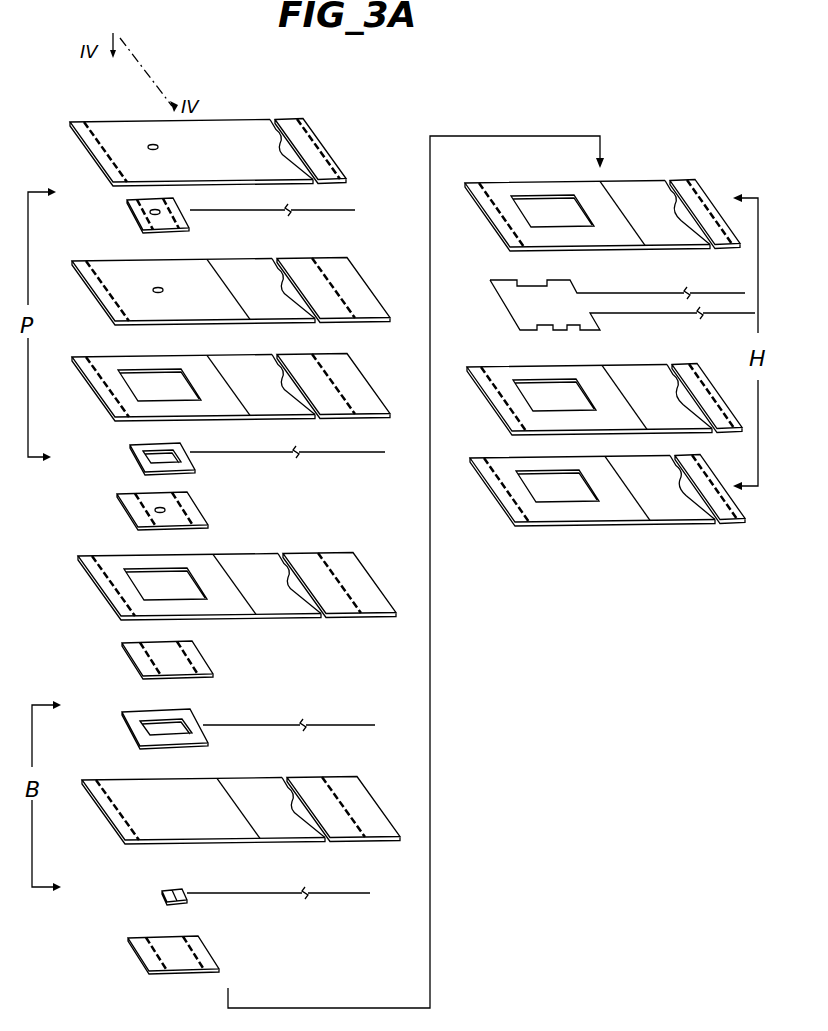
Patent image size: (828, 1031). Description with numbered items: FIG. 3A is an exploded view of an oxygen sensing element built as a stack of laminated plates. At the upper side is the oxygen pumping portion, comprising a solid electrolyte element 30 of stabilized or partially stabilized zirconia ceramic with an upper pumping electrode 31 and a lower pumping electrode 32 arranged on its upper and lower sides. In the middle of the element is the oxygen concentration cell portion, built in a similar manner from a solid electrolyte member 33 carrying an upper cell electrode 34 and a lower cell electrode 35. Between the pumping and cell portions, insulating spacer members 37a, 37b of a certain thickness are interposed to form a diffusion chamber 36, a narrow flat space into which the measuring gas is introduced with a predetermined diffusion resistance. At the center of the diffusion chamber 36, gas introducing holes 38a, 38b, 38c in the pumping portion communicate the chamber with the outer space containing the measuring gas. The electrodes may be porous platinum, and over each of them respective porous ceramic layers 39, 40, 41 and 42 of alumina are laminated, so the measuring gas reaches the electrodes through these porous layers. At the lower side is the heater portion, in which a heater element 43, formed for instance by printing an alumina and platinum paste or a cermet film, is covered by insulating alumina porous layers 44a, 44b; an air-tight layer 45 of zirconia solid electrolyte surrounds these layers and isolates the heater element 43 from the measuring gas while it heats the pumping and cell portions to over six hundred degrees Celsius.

The solid electrolyte element 30 is at (113, 303).
The upper pumping electrode 31 is at (128, 213).
The lower pumping electrode 32 is at (129, 457).
The solid electrolyte member 33 is at (118, 820).
The upper cell electrode 34 is at (133, 733).
The lower cell electrode 35 is at (162, 893).
The diffusion chamber 36 is at (148, 578).
The spacer member 37a is at (105, 393).
The spacer member 37b is at (105, 587).
The gas introducing hole 38a is at (160, 145).
The gas introducing hole 38b is at (160, 288).
The gas introducing hole 38c is at (163, 510).
The porous ceramic layer 39 is at (100, 152).
The porous ceramic layer 40 is at (124, 509).
The porous ceramic layer 41 is at (129, 662).
The porous ceramic layer 42 is at (128, 941).
The heater element 43 is at (498, 302).
The porous layer 44a is at (499, 212).
The porous layer 44b is at (500, 397).
The air-tight layer 45 is at (495, 482).